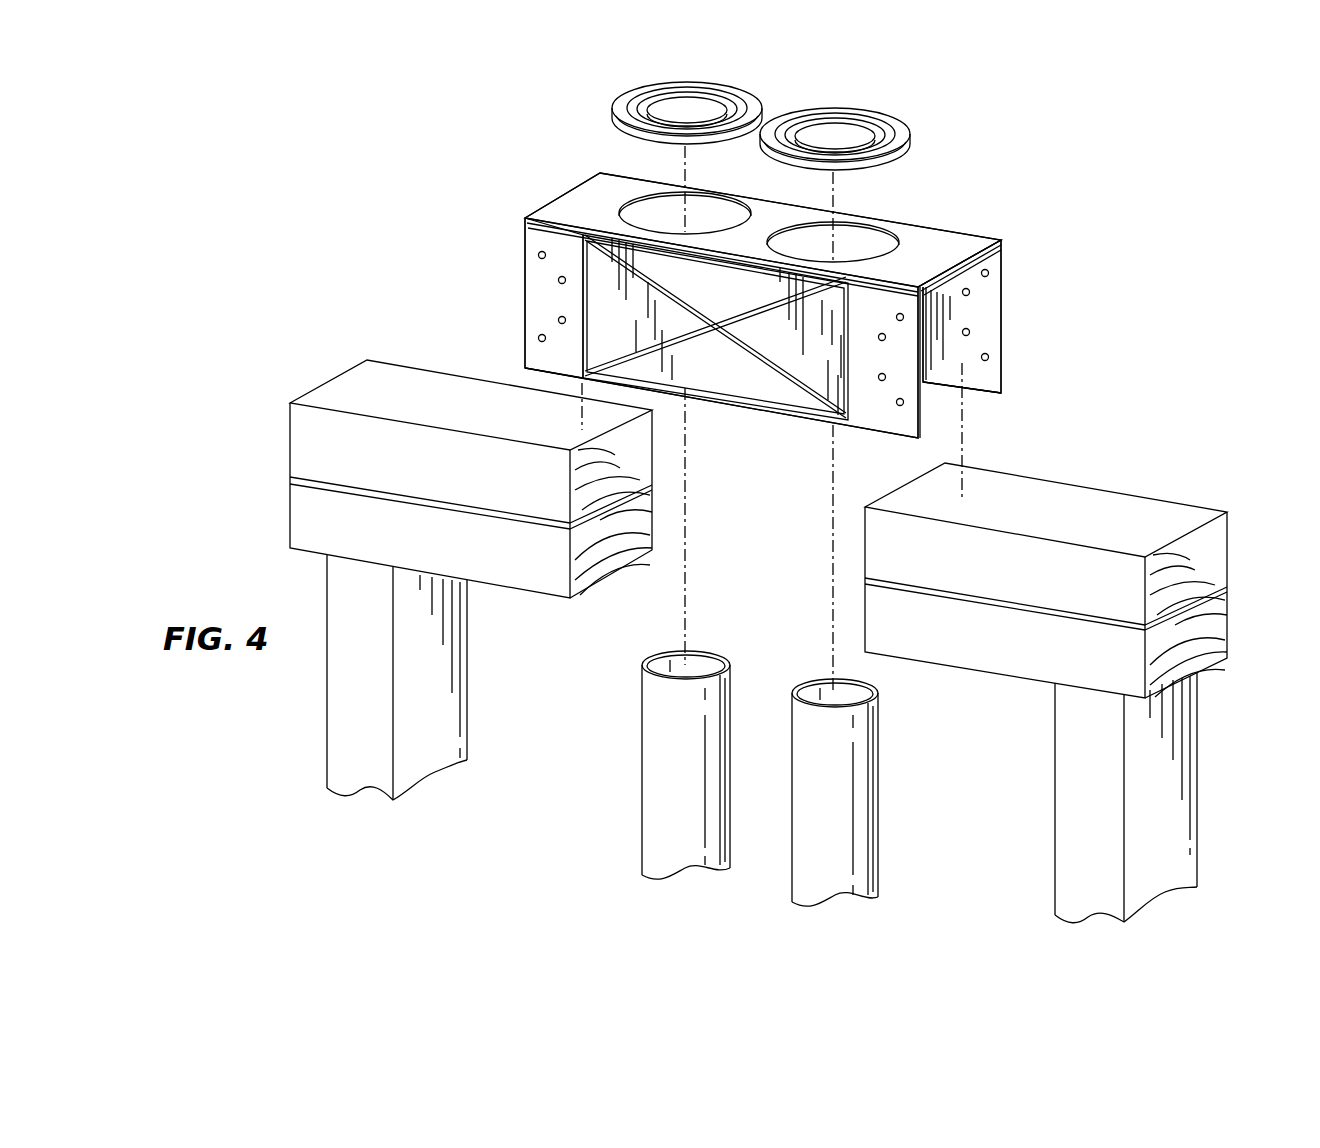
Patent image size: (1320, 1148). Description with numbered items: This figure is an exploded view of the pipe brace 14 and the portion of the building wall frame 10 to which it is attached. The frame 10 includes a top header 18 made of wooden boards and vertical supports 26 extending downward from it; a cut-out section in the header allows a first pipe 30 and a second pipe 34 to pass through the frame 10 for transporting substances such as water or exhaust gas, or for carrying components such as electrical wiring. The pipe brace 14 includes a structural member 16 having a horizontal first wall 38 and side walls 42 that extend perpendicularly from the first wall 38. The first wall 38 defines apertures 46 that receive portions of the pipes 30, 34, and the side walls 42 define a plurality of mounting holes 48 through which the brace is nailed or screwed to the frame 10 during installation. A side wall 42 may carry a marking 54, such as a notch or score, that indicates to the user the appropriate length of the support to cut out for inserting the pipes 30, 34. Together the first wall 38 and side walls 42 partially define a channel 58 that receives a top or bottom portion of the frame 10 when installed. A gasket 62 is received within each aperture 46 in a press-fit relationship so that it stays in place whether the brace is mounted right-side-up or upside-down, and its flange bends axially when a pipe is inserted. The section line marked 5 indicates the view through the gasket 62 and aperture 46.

The section line 5- 5 is at (758, 126).
The frame 10 is at (371, 260).
The pipe brace 14 is at (569, 180).
The structural member 16 is at (517, 223).
The top header 18 is at (1137, 510).
The vertical supports 26 is at (343, 752).
The first pipe 30 is at (660, 768).
The second pipe 34 is at (873, 798).
The first wall 38 is at (968, 241).
The side walls 42 is at (735, 388).
The apertures 46 is at (660, 211).
The mounting holes 48 is at (558, 316).
The marking 54 is at (860, 380).
The channel 58 is at (970, 346).
The gasket 62 is at (753, 93).